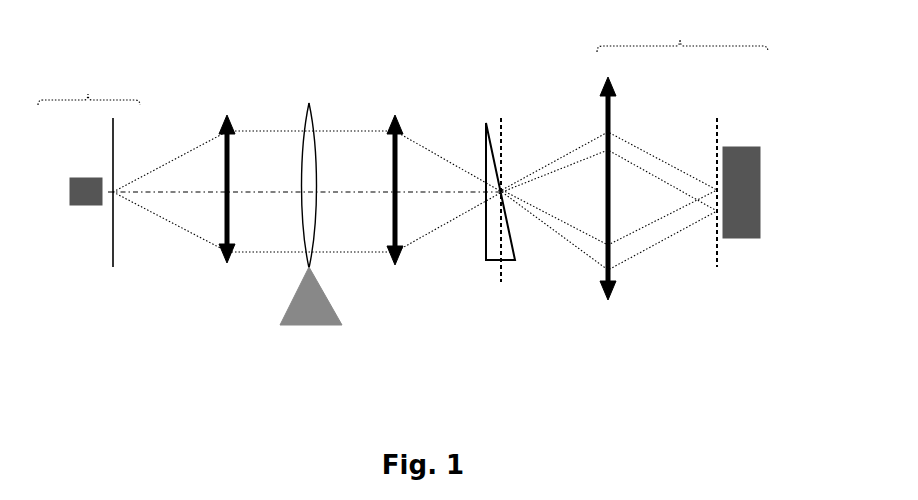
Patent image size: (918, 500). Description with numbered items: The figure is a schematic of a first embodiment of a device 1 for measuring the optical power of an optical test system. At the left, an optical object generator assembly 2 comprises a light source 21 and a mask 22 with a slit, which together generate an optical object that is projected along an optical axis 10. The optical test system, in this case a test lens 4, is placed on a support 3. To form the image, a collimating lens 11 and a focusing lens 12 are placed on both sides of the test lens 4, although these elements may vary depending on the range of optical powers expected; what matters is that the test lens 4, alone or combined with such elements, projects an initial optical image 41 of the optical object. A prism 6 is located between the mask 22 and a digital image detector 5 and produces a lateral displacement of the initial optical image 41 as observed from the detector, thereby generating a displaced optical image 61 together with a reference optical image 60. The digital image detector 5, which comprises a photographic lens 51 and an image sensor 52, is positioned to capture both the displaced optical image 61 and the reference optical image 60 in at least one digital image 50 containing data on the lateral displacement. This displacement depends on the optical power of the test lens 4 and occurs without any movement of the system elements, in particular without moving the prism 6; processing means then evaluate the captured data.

The device 1 is at (456, 342).
The optical object generator assembly 2 is at (132, 188).
The support 3 is at (311, 313).
The test lens 4 is at (300, 170).
The digital image detector 5 is at (675, 158).
The prism 6 is at (485, 166).
The optical axis 10 is at (278, 193).
The collimating lens 11 is at (223, 181).
The focusing lens 12 is at (390, 165).
The light source 21 is at (70, 190).
The mask 22 is at (113, 249).
The initial optical image 41 is at (502, 277).
The digital image 50 is at (718, 258).
The photographic lens 51 is at (603, 161).
The image sensor 52 is at (760, 197).
The reference optical image 60 is at (667, 216).
The displaced optical image 61 is at (682, 230).